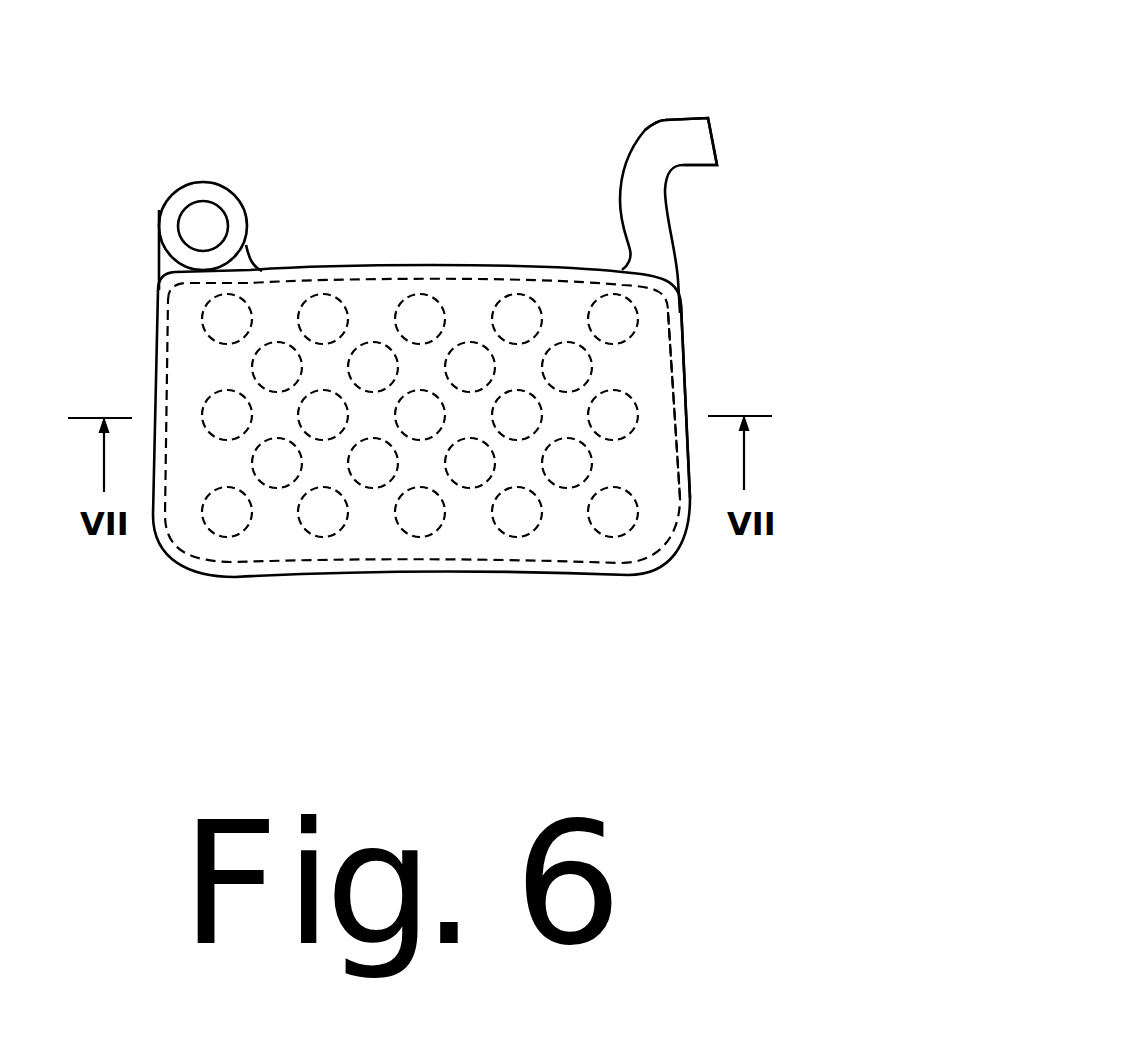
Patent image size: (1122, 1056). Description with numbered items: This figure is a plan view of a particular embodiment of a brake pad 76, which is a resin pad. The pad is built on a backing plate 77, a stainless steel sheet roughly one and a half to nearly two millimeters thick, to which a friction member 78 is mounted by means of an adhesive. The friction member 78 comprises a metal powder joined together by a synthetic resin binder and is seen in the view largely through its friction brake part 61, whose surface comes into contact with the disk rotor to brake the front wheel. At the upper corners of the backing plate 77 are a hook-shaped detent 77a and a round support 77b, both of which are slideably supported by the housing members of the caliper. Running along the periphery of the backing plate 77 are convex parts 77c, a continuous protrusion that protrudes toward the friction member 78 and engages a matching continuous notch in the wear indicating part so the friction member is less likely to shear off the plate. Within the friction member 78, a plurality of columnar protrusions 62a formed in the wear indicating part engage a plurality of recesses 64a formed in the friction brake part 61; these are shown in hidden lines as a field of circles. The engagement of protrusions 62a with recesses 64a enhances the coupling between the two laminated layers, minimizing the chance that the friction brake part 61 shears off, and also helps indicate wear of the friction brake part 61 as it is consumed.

The friction brake part 61 is at (250, 558).
The columnar protrusions 62a is at (503, 522).
The recesses 64a is at (532, 523).
The brake pad 76 is at (413, 222).
The backing plate 77 is at (657, 229).
The hook-shaped detent 77a is at (670, 137).
The round support 77b is at (213, 212).
The convex parts 77c is at (680, 373).
The friction member 78 is at (650, 340).